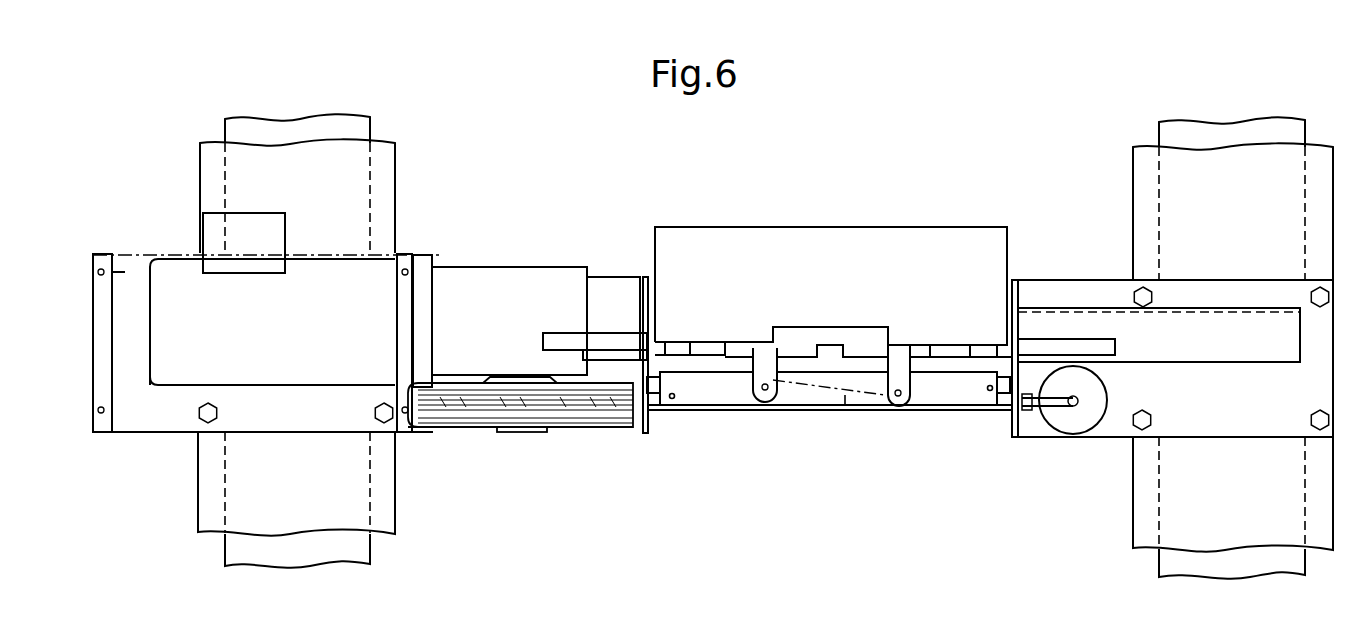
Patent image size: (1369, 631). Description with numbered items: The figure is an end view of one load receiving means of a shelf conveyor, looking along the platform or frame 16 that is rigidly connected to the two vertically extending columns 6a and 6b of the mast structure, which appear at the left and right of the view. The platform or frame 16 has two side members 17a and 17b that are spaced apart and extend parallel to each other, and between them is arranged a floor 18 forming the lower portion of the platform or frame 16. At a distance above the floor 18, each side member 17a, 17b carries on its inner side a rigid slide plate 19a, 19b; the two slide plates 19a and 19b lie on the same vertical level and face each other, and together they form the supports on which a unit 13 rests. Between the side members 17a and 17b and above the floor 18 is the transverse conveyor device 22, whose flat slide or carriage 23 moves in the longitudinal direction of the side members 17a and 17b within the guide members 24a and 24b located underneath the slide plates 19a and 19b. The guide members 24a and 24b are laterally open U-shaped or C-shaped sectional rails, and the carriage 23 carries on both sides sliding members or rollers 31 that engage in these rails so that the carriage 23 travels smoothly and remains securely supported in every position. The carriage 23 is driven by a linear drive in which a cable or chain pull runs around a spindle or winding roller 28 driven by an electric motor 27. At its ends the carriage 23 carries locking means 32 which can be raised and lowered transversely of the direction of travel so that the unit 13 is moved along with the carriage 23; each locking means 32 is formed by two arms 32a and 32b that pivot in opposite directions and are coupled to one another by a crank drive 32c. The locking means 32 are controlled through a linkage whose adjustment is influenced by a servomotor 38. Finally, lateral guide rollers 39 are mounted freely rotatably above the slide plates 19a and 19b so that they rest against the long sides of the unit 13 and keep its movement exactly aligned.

The column 6a is at (348, 125).
The column 6b is at (1290, 130).
The unit 13 is at (945, 245).
The platform or frame 16 is at (652, 400).
The side member 17a is at (645, 340).
The side member 17b is at (1033, 348).
The floor 18 is at (800, 410).
The slide plate 19a is at (700, 378).
The slide plate 19b is at (955, 375).
The transverse conveyor device 22 is at (633, 400).
The slide or carriage 23 is at (848, 402).
The guide member 24a is at (660, 343).
The guide member 24b is at (990, 343).
The electric motor 27 is at (455, 285).
The spindle or winding roller 28 is at (447, 428).
The rollers 31 is at (674, 398).
The locking means 32 is at (885, 350).
The pivotable arm 32a is at (925, 345).
The pivotable arm 32b is at (757, 345).
The crank drive 32c is at (805, 400).
The servomotor 38 is at (1068, 420).
The lateral guide rollers 39 is at (557, 338).